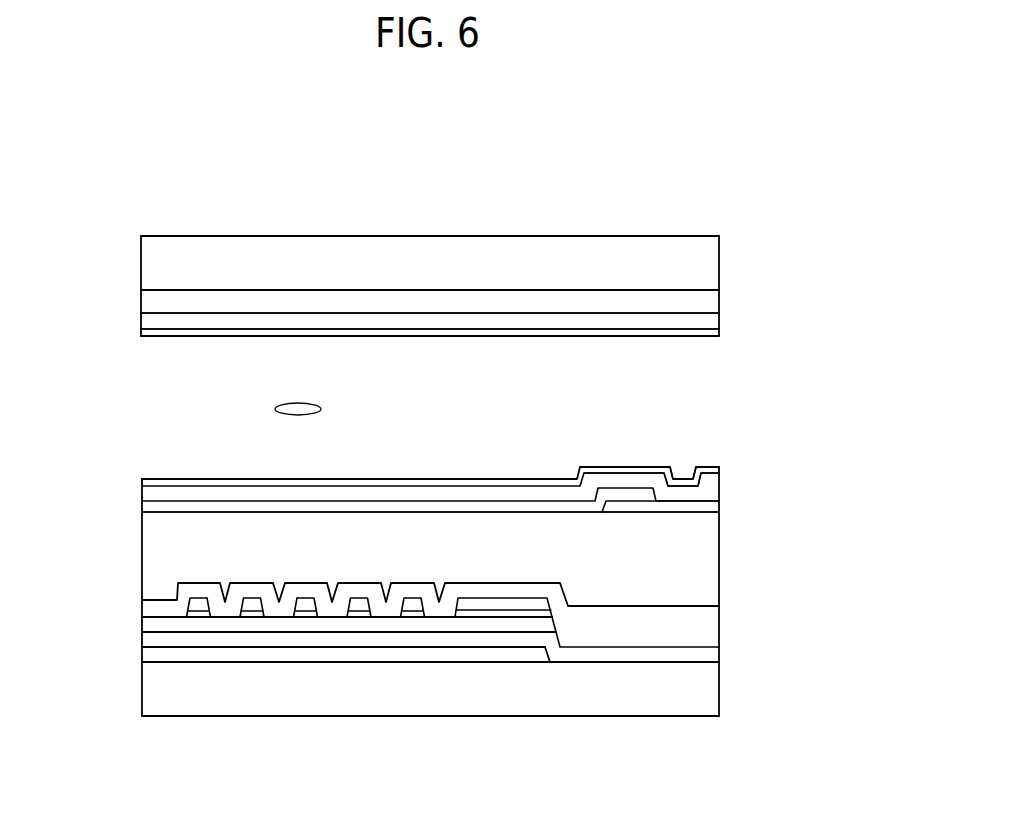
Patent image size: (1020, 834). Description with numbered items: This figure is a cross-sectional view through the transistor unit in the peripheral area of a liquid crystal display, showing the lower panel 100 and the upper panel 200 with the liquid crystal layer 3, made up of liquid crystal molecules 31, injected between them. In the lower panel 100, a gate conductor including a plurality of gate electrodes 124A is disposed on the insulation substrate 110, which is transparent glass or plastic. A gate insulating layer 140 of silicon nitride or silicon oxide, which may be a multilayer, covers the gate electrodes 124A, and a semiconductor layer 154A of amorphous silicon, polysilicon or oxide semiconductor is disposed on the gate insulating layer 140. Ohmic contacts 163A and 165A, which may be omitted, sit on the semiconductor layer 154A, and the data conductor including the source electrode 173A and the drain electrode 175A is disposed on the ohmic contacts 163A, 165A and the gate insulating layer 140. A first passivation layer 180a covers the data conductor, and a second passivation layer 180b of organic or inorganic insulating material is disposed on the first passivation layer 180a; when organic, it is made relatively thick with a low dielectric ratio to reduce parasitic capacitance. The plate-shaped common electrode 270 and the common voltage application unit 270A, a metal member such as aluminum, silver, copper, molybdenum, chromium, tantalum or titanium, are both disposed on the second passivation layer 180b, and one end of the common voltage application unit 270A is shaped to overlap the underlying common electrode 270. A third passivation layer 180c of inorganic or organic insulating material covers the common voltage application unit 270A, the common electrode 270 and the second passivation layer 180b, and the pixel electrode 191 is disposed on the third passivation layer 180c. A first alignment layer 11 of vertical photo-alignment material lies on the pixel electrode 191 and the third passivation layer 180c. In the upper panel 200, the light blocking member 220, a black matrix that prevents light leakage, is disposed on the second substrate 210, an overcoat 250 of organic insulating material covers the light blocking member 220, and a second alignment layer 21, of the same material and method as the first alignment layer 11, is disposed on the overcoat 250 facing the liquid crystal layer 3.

The upper panel 200 is at (735, 236).
The second substrate 210 is at (563, 260).
The light blocking member 220 is at (465, 302).
The overcoat 250 is at (368, 320).
The second alignment layer 21 is at (176, 333).
The liquid crystal layer 3 is at (735, 340).
The liquid crystal molecule 31 is at (302, 402).
The lower panel 100 is at (735, 467).
The first alignment layer 11 is at (178, 484).
The pixel electrode 191 is at (710, 478).
The third passivation layer 180c is at (512, 494).
The common electrode 270 is at (622, 507).
The common voltage application unit 270A is at (412, 508).
The second passivation layer 180b is at (660, 568).
The first passivation layer 180a is at (590, 628).
The source electrode 173A is at (197, 600).
The drain electrode 175A is at (250, 598).
The ohmic contact 163A is at (198, 618).
The ohmic contact 165A is at (253, 618).
The semiconductor layer 154A is at (308, 625).
The gate insulating layer 140 is at (377, 640).
The gate electrode 124A is at (450, 655).
The insulation substrate 110 is at (515, 693).